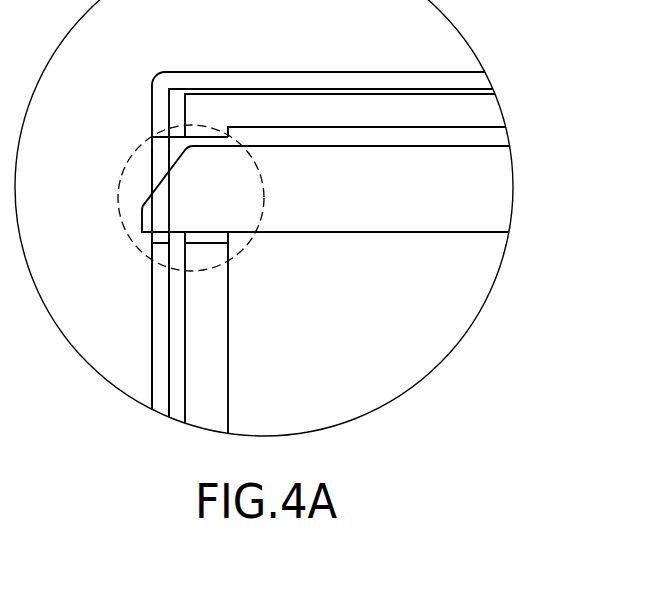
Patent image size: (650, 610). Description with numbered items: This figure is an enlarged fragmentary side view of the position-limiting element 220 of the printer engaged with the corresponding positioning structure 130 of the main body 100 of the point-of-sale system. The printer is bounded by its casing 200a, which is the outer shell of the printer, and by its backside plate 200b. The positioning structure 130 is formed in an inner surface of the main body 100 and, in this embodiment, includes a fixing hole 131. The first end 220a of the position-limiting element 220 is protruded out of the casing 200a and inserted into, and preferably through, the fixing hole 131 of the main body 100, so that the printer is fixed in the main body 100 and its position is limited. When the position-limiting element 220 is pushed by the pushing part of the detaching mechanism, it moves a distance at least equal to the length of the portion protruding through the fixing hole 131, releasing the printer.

The main body 100 is at (237, 80).
The fixing hole 131 is at (157, 168).
The backside plate 200b is at (332, 103).
The position-limiting element 220 is at (400, 220).
The positioning structure 130 is at (245, 247).
The first end of the position-limiting element 220a is at (170, 205).
The casing 200a is at (213, 385).